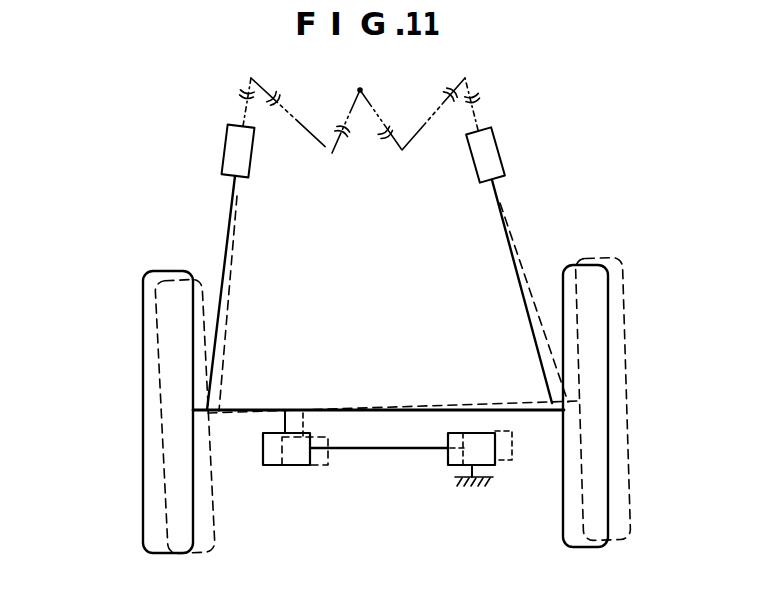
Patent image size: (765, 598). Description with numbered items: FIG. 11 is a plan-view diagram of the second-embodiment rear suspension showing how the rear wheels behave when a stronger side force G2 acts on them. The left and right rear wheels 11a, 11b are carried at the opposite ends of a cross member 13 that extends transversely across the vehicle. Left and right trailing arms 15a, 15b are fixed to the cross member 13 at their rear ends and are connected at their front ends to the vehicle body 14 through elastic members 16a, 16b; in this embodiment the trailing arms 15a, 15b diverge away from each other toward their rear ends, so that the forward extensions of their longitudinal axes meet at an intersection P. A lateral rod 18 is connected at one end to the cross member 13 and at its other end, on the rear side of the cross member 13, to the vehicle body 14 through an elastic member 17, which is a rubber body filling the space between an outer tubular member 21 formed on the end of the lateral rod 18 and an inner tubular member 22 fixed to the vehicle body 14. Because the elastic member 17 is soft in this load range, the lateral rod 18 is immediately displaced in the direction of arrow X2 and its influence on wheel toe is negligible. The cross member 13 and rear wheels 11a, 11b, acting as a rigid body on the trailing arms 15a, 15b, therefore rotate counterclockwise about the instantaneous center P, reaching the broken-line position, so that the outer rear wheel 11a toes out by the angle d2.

The left rear wheel 11a is at (148, 552).
The right rear wheel 11b is at (565, 540).
The cross member 13 is at (355, 408).
The vehicle body 14 is at (462, 479).
The left trailing arm 15a is at (224, 278).
The right trailing arm 15b is at (515, 263).
The elastic member 16a is at (249, 163).
The elastic member 16b is at (501, 160).
The elastic member 17 is at (455, 433).
The lateral rod 18 is at (370, 451).
The outer tubular member 21 is at (447, 457).
The inner tubular member 22 is at (478, 466).
The intersection (instantaneous center) P is at (363, 90).
The arrow X2 (direction of lateral rod displacement) X2 is at (467, 417).
The toe-out angle delta 2 d2 is at (128, 250).
The side force G2 is at (88, 440).